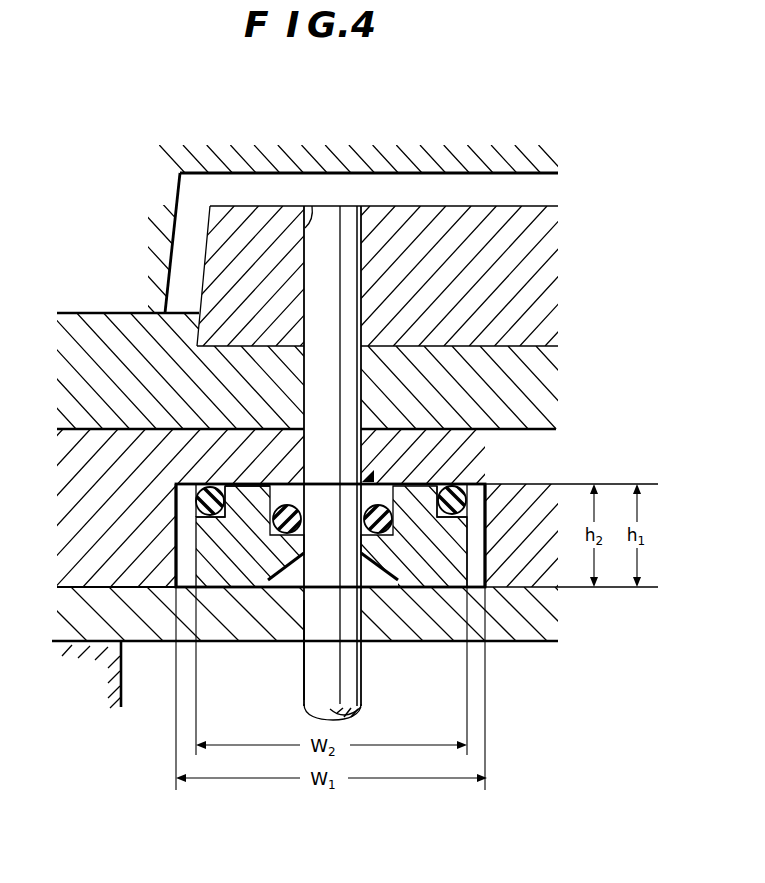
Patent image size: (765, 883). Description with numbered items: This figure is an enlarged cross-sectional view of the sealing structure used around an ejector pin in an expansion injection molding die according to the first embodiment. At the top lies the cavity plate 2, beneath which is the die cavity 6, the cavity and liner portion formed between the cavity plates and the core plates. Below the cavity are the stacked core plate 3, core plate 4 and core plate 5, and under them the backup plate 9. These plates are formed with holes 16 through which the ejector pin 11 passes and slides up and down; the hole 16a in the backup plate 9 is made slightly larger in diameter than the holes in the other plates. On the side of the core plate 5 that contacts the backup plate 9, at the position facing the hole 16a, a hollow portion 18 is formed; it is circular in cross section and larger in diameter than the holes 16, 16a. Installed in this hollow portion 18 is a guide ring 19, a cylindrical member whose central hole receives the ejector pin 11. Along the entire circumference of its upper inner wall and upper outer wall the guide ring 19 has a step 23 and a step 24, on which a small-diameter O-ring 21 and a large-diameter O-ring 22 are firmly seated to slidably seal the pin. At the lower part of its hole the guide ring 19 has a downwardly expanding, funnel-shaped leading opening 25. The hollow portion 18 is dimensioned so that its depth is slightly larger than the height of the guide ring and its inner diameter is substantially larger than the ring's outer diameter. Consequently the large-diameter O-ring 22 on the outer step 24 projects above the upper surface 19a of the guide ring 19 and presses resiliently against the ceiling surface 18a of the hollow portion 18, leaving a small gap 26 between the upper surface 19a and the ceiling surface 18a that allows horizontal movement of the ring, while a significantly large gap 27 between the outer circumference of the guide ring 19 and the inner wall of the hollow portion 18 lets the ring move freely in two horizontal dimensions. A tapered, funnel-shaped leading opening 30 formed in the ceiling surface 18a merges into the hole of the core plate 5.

The cavity plate 2 is at (382, 134).
The core plate 3 is at (472, 282).
The core plate 4 is at (472, 397).
The core plate 5 is at (530, 522).
The die cavity 6 is at (477, 187).
The backup plate 9 is at (543, 625).
The ejector pin 11 is at (347, 683).
The hole 16 is at (312, 206).
The hole 16a is at (301, 632).
The hollow portion 18 is at (181, 562).
The ceiling surface 18a is at (176, 491).
The guide ring 19 is at (190, 532).
The upper surface 19a is at (250, 484).
The small-diameter O-ring 21 is at (270, 565).
The large-diameter O-ring 22 is at (196, 489).
The step 23 is at (278, 498).
The step 24 is at (469, 513).
The leading opening 25 is at (380, 578).
The gap 26 is at (224, 484).
The gap 27 is at (478, 576).
The leading opening 30 is at (375, 478).